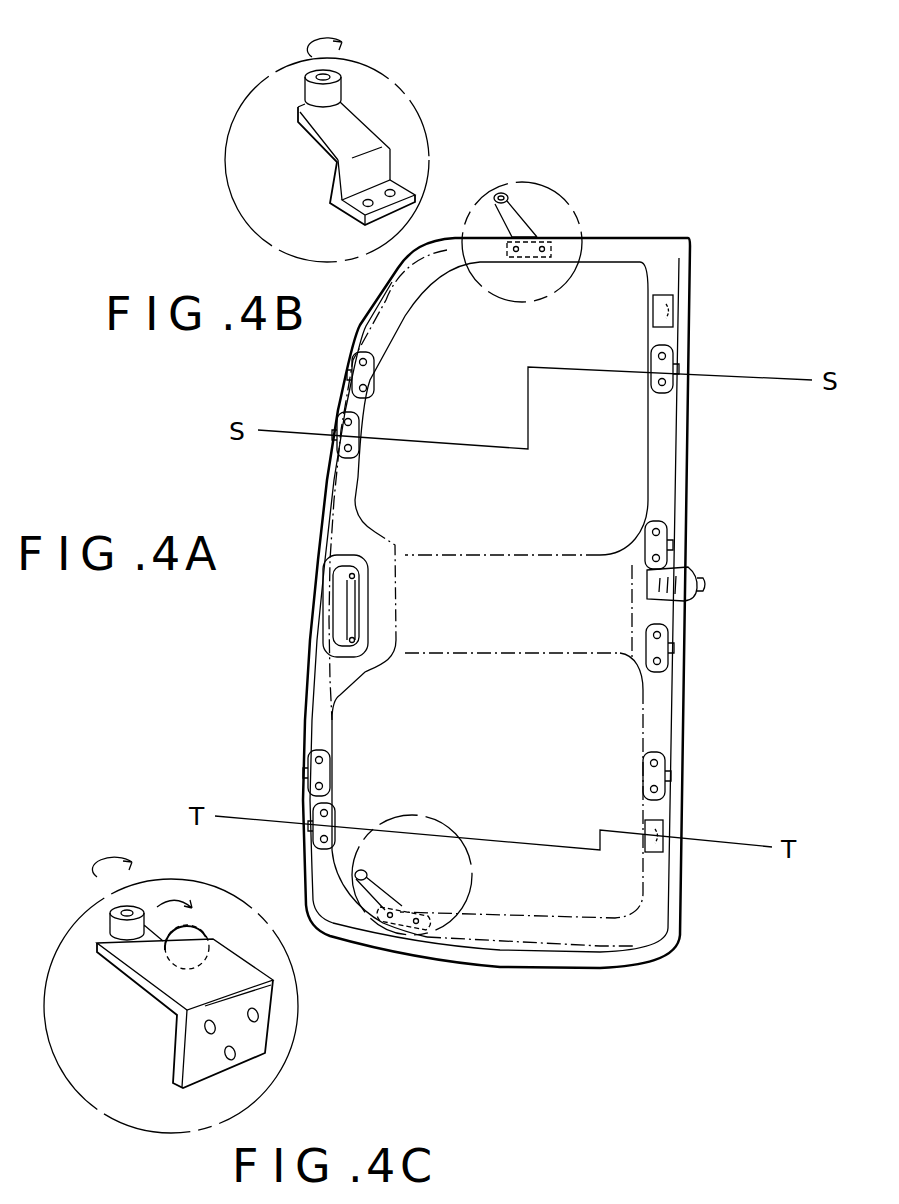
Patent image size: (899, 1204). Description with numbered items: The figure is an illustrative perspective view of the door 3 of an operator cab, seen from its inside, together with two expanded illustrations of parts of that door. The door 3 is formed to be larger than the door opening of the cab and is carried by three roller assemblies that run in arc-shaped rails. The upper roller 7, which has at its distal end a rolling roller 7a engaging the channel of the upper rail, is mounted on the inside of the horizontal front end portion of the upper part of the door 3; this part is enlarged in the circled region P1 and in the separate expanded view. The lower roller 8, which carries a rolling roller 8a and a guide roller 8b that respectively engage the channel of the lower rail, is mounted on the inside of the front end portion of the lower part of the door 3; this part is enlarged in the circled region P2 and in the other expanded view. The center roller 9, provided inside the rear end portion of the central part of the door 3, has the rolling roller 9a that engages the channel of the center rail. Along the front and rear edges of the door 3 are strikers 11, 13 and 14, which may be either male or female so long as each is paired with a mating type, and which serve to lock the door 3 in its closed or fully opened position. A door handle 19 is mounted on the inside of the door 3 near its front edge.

In FIG. 4A, the door 3 is at (694, 246).
In FIG. 4A, the upper roller 7 is at (525, 198).
In FIG. 4B, the upper roller 7 is at (367, 112).
In FIG. 4B, the rolling roller 7a is at (340, 80).
In FIG. 4A, the lower roller 8 is at (374, 886).
In FIG. 4C, the lower roller 8 is at (154, 1000).
In FIG. 4C, the rolling roller 8a is at (190, 926).
In FIG. 4C, the guide roller 8b is at (110, 903).
In FIG. 4A, the center roller 9 is at (690, 602).
In FIG. 4A, the rolling roller 9a is at (704, 583).
In FIG. 4A, the striker 11 is at (670, 375).
In FIG. 4A, the striker 13 is at (372, 374).
In FIG. 4A, the striker 14 is at (668, 310).
In FIG. 4A, the door handle 19 is at (340, 600).
In FIG. 4A, the upper portion P1 is at (562, 202).
In FIG. 4A, the lower portion P2 is at (452, 845).